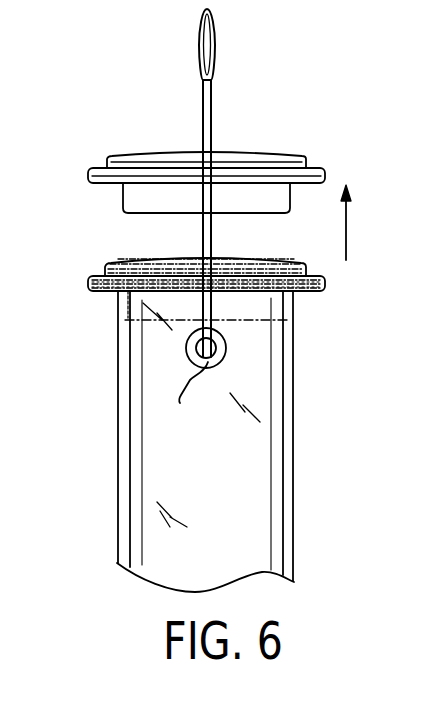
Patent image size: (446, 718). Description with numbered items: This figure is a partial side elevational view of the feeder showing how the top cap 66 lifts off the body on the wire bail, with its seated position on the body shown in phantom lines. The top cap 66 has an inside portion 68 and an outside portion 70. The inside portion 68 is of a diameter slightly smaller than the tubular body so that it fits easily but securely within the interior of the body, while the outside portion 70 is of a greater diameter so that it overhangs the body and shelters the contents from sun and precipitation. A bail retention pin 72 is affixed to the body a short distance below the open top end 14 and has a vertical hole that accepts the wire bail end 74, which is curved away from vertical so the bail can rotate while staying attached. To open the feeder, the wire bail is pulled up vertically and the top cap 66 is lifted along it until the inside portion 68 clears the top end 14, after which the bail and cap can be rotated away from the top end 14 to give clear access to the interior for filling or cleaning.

The open top end 14 is at (295, 292).
The top cap 66 is at (270, 157).
The inside portion 68 is at (280, 198).
The outside portion 70 is at (109, 157).
The bail retention pin 72 is at (226, 348).
The wire bail end 74 is at (199, 393).